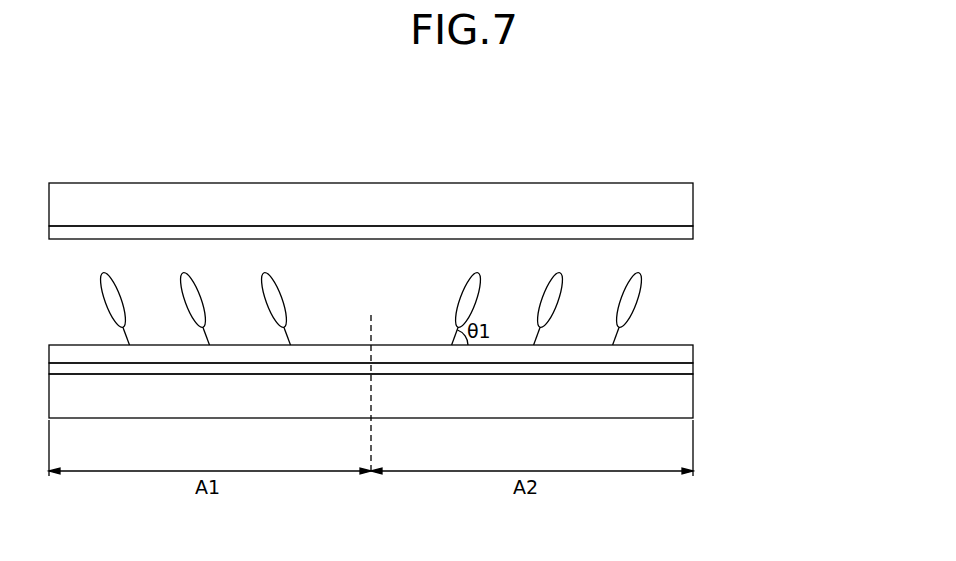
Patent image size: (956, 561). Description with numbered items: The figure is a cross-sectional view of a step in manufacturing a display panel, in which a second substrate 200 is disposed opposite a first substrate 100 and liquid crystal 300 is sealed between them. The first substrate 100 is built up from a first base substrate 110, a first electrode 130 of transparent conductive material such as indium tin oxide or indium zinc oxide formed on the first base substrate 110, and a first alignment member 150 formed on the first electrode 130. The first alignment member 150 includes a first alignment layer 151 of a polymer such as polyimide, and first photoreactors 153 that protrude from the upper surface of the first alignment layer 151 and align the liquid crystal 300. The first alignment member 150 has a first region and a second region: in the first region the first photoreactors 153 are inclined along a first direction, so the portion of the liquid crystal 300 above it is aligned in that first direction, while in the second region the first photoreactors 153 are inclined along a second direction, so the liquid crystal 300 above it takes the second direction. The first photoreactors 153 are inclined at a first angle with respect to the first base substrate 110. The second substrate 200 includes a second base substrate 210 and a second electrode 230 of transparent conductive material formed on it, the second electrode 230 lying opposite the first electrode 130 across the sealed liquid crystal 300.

The first substrate 100 is at (464, 356).
The first base substrate 110 is at (687, 393).
The first electrode 130 is at (687, 368).
The first alignment member 150 is at (437, 329).
The first alignment layer 151 is at (687, 355).
The first photoreactor 153 is at (621, 337).
The second substrate 200 is at (437, 213).
The second base substrate 210 is at (687, 197).
The second electrode 230 is at (687, 232).
The liquid crystal 300 is at (637, 288).